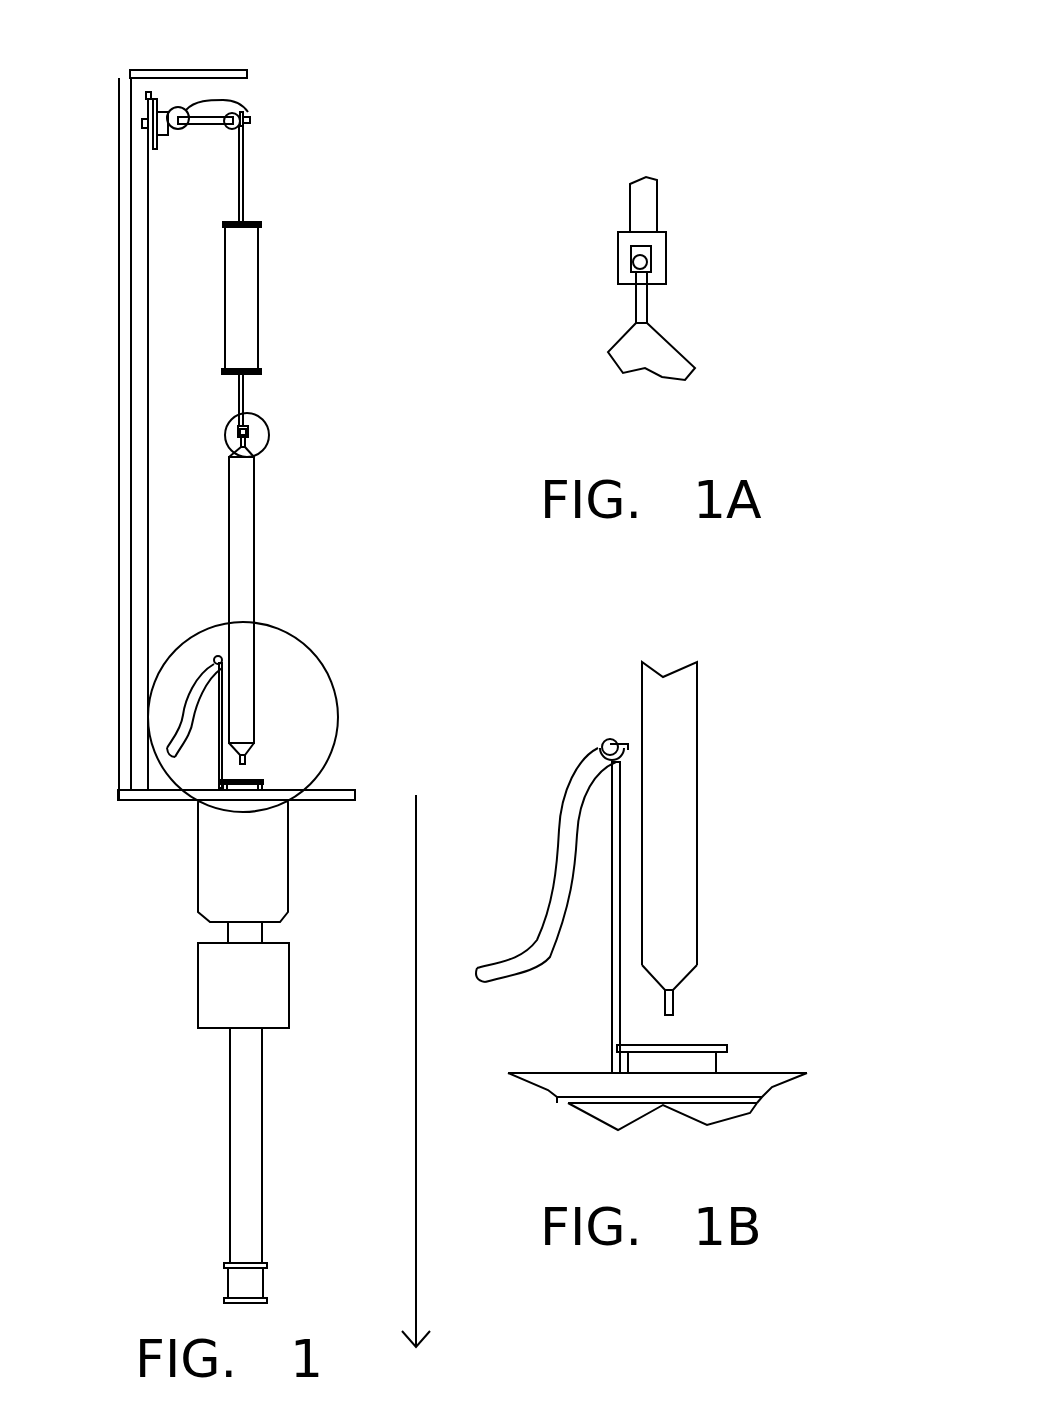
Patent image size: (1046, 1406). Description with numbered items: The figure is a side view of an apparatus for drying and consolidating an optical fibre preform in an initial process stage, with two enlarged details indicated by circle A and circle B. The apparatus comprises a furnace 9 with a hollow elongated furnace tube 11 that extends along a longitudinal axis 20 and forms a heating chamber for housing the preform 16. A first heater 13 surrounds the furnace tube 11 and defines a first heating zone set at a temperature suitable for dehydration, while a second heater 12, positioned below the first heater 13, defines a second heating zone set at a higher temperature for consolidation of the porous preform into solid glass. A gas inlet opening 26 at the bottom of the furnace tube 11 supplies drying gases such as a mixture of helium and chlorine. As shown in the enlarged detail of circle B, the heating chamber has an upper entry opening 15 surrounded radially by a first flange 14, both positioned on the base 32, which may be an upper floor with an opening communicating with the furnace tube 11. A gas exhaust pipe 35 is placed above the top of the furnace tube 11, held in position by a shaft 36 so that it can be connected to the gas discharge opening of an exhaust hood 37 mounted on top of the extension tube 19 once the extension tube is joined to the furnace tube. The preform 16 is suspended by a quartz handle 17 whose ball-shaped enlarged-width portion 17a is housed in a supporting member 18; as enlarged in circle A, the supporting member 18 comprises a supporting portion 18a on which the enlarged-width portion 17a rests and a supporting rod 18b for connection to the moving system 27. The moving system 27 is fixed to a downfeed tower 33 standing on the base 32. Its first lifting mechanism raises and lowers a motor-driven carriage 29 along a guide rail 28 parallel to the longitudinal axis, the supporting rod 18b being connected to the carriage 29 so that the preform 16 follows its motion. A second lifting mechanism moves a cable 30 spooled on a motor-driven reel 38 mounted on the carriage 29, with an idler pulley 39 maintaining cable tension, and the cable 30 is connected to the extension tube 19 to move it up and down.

In FIG. 1, the furnace 9 is at (130, 983).
In FIG. 1, the furnace tube 11 is at (263, 1086).
In FIG. 1B, the furnace tube 11 is at (716, 1062).
In FIG. 1, the second heater 12 is at (290, 963).
In FIG. 1, the first heater 13 is at (289, 865).
In FIG. 1B, the first heater 13 is at (723, 1115).
In FIG. 1B, the first flange 14 is at (727, 1048).
In FIG. 1B, the upper entry opening 15 is at (660, 1045).
In FIG. 1, the preform 16 is at (254, 542).
In FIG. 1A, the preform 16 is at (678, 347).
In FIG. 1B, the preform 16 is at (697, 767).
In FIG. 1A, the handle 17 is at (650, 303).
In FIG. 1A, the enlarged-width portion 17a is at (633, 256).
In FIG. 1A, the supporting member 18 is at (618, 232).
In FIG. 1A, the supporting portion 18a is at (668, 244).
In FIG. 1, the supporting rod 18b is at (243, 180).
In FIG. 1A, the supporting rod 18b is at (652, 207).
In FIG. 1, the extension tube 19 is at (258, 305).
In FIG. 1, the axis 20 is at (417, 1310).
In FIG. 1, the gas inlet opening 26 is at (258, 1277).
In FIG. 1, the moving system 27 is at (168, 192).
In FIG. 1, the guide rail 28 is at (147, 337).
In FIG. 1, the carriage 29 is at (166, 136).
In FIG. 1, the cable 30 is at (237, 112).
In FIG. 1, the base 32 is at (333, 788).
In FIG. 1B, the base 32 is at (767, 1083).
In FIG. 1, the downfeed tower 33 is at (118, 162).
In FIG. 1B, the gas exhaust pipe 35 is at (558, 793).
In FIG. 1B, the shaft 36 is at (612, 1007).
In FIG. 1, the exhaust hood 37 is at (260, 224).
In FIG. 1, the reel 38 is at (222, 116).
In FIG. 1, the idler pulley 39 is at (240, 117).
In FIG. 1, the circle A is at (270, 433).
In FIG. 1, the circle B is at (320, 662).